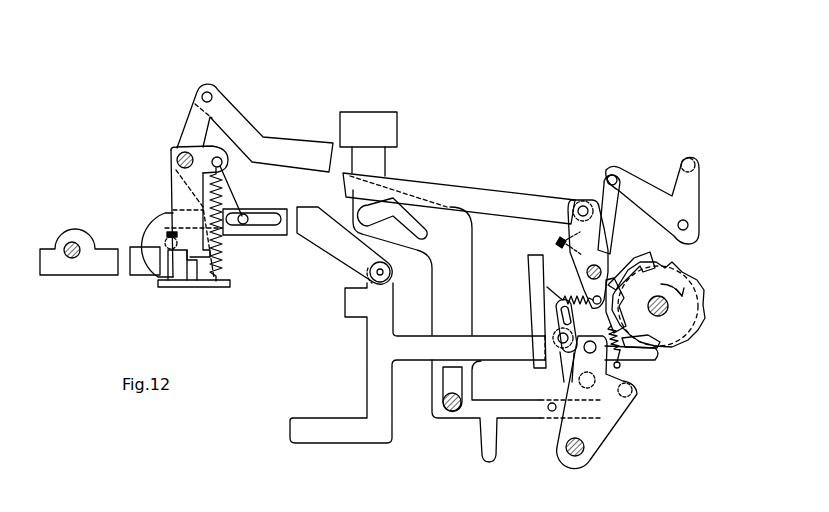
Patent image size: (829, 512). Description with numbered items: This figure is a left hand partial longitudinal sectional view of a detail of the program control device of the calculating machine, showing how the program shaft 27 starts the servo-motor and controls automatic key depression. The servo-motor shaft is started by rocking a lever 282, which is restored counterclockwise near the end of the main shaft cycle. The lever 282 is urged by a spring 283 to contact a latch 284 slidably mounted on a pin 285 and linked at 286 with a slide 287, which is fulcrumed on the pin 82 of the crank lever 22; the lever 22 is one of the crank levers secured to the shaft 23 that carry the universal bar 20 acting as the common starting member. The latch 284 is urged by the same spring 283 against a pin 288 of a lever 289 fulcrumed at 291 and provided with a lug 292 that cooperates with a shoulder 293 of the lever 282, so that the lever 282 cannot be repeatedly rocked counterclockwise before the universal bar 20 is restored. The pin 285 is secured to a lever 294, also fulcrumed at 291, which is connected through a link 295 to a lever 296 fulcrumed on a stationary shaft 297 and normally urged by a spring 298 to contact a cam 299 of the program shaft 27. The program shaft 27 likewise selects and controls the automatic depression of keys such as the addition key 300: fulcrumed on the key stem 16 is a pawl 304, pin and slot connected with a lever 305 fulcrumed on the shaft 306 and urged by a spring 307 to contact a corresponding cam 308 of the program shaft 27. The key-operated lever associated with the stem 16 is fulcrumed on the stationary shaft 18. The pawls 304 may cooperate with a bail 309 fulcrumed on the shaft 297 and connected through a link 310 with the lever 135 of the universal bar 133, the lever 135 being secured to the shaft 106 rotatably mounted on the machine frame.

The key stem 16 is at (468, 302).
The stationary shaft 18 is at (452, 412).
The universal bar 20 is at (633, 389).
The crank lever 22 is at (609, 428).
The shaft 23 is at (583, 453).
The program shaft 27 is at (651, 302).
The pin 82 is at (590, 341).
The shaft 106 is at (687, 229).
The universal bar 133 is at (687, 158).
The lever 135 is at (641, 190).
The lever 282 is at (135, 273).
The spring 283 is at (224, 258).
The latch 284 is at (156, 215).
The pin 285 is at (245, 216).
The link pivot 286 is at (391, 273).
The slide 287 is at (415, 355).
The pin 288 is at (164, 241).
The lever 289 is at (170, 187).
The fulcrum 291 is at (181, 153).
The lug 292 is at (213, 288).
The shoulder 293 is at (182, 278).
The lever 294 is at (190, 113).
The link 295 is at (346, 188).
The lever 296 is at (652, 252).
The stationary shaft 297 is at (599, 266).
The spring 298 is at (563, 298).
The cam 299 is at (683, 338).
The addition key 300 is at (396, 117).
The pawl 304 is at (531, 270).
The lever 305 is at (655, 361).
The shaft 306 is at (579, 375).
The spring 307 is at (620, 337).
The cam 308 is at (657, 350).
The bail 309 is at (559, 242).
The link 310 is at (600, 195).